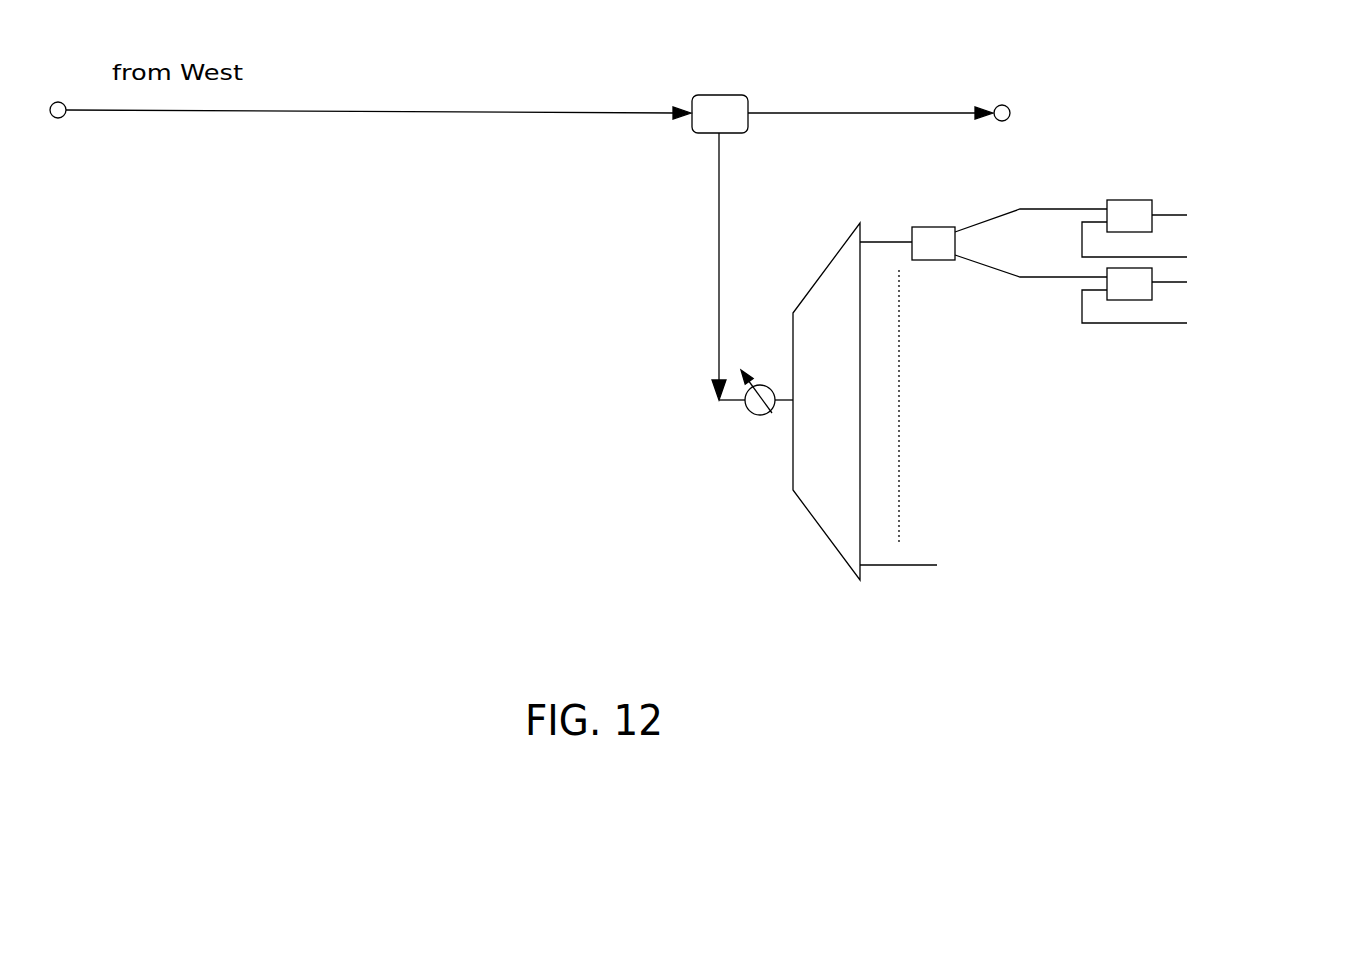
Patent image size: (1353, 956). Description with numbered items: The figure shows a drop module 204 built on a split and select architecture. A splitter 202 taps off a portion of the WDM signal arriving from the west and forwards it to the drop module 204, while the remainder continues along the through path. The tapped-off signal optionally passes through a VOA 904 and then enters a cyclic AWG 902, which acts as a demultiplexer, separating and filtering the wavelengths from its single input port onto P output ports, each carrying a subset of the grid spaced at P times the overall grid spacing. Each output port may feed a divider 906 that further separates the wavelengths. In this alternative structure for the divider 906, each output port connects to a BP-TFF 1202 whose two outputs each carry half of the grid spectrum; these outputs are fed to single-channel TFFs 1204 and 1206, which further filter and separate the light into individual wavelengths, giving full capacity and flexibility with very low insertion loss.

The splitter 202 is at (732, 116).
The drop module 204 is at (1189, 684).
The cyclic AWG 902 is at (838, 280).
The VOA 904 is at (750, 373).
The divider 906 is at (1157, 116).
The BP-TFF 1202 is at (925, 262).
The TFF 1204 is at (1152, 205).
The TFF 1206 is at (1152, 282).